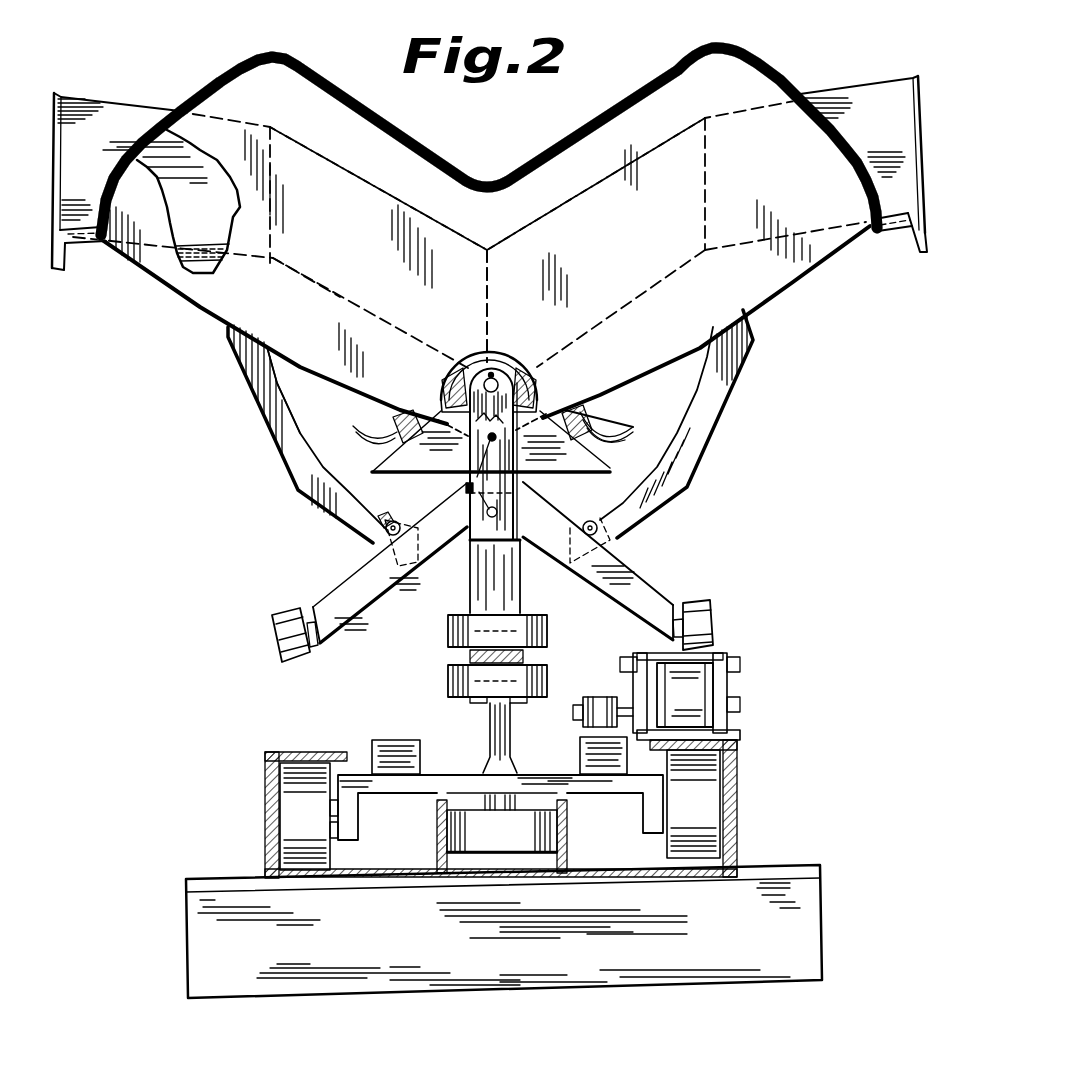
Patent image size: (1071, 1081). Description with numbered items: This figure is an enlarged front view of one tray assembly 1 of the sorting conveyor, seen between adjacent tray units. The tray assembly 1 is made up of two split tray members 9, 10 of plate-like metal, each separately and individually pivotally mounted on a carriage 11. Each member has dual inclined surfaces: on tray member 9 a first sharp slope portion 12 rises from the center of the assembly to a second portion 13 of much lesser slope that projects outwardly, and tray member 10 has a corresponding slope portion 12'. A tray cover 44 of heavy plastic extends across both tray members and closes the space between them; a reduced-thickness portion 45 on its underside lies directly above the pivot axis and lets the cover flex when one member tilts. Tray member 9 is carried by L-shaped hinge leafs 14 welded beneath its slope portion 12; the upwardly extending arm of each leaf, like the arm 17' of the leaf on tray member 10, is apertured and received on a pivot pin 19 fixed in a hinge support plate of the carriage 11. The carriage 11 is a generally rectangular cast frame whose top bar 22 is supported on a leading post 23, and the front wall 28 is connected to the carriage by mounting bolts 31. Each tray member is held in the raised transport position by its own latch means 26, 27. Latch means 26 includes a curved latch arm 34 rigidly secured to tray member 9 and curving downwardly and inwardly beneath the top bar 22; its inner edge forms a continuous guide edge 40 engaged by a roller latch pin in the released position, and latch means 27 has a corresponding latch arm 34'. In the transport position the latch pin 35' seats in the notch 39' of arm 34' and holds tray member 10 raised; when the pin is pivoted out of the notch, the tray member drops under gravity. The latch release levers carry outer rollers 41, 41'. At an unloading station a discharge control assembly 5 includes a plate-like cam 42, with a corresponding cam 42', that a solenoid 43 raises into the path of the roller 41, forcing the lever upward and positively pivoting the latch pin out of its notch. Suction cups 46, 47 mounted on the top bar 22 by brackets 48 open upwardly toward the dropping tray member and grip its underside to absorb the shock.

The tray assembly 1 is at (650, 68).
The discharge control assembly 5 is at (644, 650).
The tray member 9 is at (868, 88).
The tray member 10 is at (150, 63).
The carriage 11 is at (470, 587).
The slope portion 12 is at (487, 251).
The slope portion 12' is at (311, 291).
The second portion 13 is at (881, 133).
The hinge leaf 14 is at (441, 390).
The leaf arm 17' is at (491, 441).
The pivot pin 19 is at (497, 368).
The top bar 22 is at (530, 475).
The leading post 23 is at (522, 586).
The latch means 26 is at (661, 525).
The latch means 27 is at (333, 574).
The front wall 28 is at (297, 203).
The mounting bolts 31 is at (468, 488).
The latch arm 34 is at (686, 424).
The latch arm 34' is at (291, 434).
The latch pin 35' is at (495, 519).
The notch 39' is at (354, 539).
The guide edge 40 is at (300, 428).
The roller 41 is at (699, 590).
The roller 41' is at (266, 657).
The cam 42 is at (571, 689).
The cam 42' is at (578, 753).
The solenoid 43 is at (692, 705).
The tray cover 44 is at (488, 360).
The flexible portion 45 is at (492, 372).
The suction cup 46 is at (613, 411).
The suction cup 47 is at (363, 424).
The bracket 48 is at (595, 459).